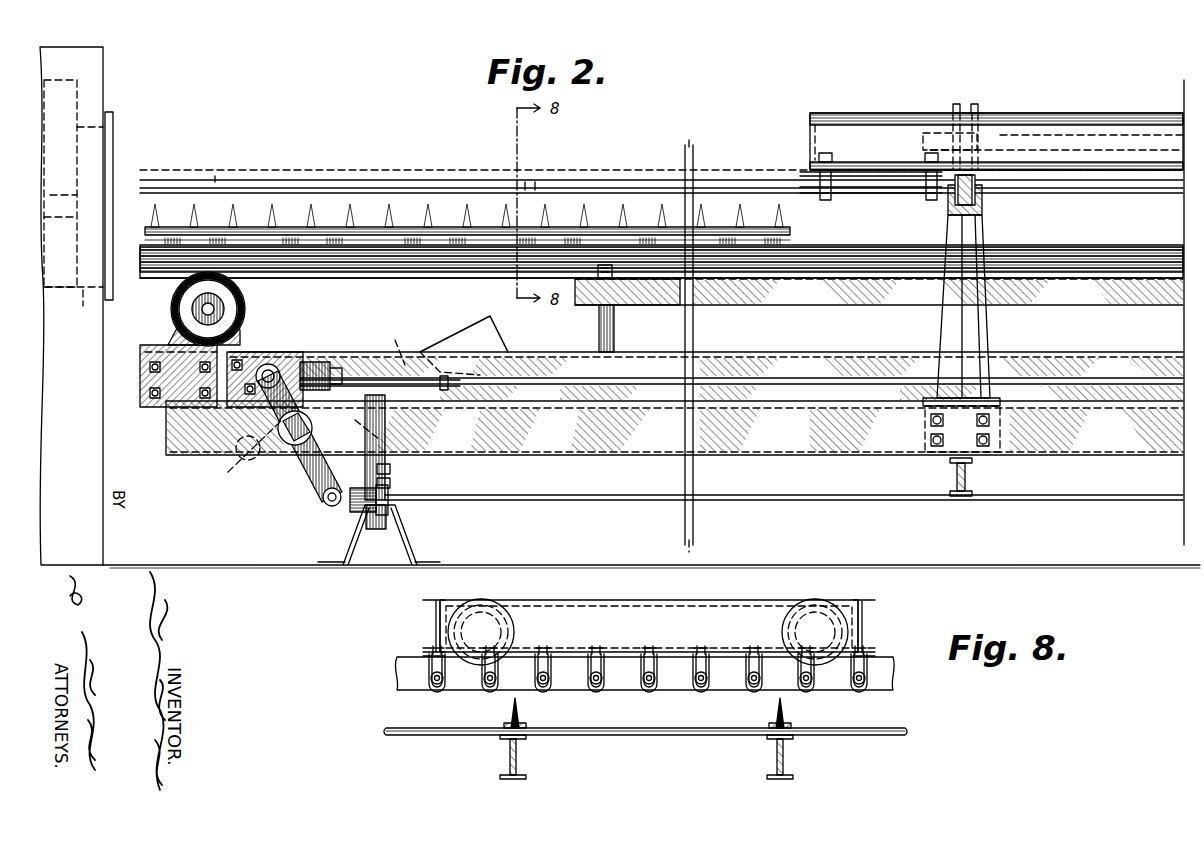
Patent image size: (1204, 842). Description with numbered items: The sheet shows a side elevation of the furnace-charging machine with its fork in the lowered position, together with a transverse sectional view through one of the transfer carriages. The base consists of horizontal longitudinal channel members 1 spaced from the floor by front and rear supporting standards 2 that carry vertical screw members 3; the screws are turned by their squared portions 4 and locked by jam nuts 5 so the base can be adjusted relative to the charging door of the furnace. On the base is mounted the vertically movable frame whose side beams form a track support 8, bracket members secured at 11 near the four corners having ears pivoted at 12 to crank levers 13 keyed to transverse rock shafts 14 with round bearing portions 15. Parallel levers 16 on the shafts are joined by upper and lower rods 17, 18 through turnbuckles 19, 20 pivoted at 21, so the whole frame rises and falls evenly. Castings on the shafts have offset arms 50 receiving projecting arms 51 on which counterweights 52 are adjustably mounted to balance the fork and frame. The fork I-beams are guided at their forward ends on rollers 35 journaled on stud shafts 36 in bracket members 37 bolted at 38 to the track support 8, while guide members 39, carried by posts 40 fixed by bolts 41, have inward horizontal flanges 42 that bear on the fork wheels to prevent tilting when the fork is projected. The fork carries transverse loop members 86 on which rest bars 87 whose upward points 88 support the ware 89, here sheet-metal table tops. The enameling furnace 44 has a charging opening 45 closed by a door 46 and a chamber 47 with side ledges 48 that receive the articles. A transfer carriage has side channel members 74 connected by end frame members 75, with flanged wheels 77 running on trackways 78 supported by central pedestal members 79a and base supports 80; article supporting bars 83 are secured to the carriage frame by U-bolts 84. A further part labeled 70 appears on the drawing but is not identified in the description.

In FIG. 2, the longitudinal channel members 1 is at (532, 444).
In FIG. 2, the supporting standards 2 is at (408, 538).
In FIG. 2, the screw members 3 is at (392, 486).
In FIG. 2, the squared portions 4 is at (392, 470).
In FIG. 2, the jam nuts 5 is at (395, 398).
In FIG. 2, the track support 8 is at (778, 358).
In FIG. 2, the bracket securing point 11 is at (300, 365).
In FIG. 2, the pivotal connection 12 is at (232, 470).
In FIG. 2, the crank lever 13 is at (258, 462).
In FIG. 2, the rock shaft 14 is at (308, 418).
In FIG. 2, the round bearing portions 15 is at (306, 452).
In FIG. 2, the parallel lever 16 is at (365, 466).
In FIG. 2, the upper link rod 17 is at (628, 384).
In FIG. 2, the lower link rod 18 is at (640, 494).
In FIG. 2, the turnbuckle 19 is at (280, 368).
In FIG. 2, the turnbuckle 20 is at (345, 505).
In FIG. 2, the turnbuckle pivot 21 is at (322, 500).
In FIG. 2, the rollers 35 is at (172, 302).
In FIG. 2, the stud shafts 36 is at (205, 313).
In FIG. 2, the bracket members 37 is at (387, 268).
In FIG. 8, the bracket members 37 is at (520, 765).
In FIG. 2, the bracket bolting point 38 is at (203, 392).
In FIG. 2, the guide members 39 is at (855, 295).
In FIG. 2, the posts 40 is at (599, 330).
In FIG. 2, the bolts 41 is at (596, 270).
In FIG. 2, the horizontal flanges 42 is at (828, 277).
In FIG. 2, the enameling furnace 44 is at (103, 442).
In FIG. 2, the charging opening 45 is at (78, 305).
In FIG. 2, the door 46 is at (113, 138).
In FIG. 2, the combustion chamber 47 is at (73, 193).
In FIG. 2, the ledges 48 is at (61, 198).
In FIG. 2, the offset arms 50 is at (363, 433).
In FIG. 2, the projecting arms 51 is at (400, 343).
In FIG. 2, the counterweight members 52 is at (484, 324).
In FIG. 2, the bolt 70 is at (248, 356).
In FIG. 2, the side frame members 74 is at (1030, 125).
In FIG. 8, the side frame members 74 is at (433, 600).
In FIG. 8, the end frame members 75 is at (640, 615).
In FIG. 8, the flanged wheels 77 is at (490, 602).
In FIG. 8, the trackways 78 is at (672, 684).
In FIG. 2, the central pedestal members 79a is at (972, 233).
In FIG. 2, the base supports 80 is at (950, 478).
In FIG. 2, the article supporting bars 83 is at (560, 185).
In FIG. 8, the article supporting bars 83 is at (437, 686).
In FIG. 8, the U-bolts 84 is at (495, 688).
In FIG. 2, the loop members 86 is at (315, 245).
In FIG. 2, the bars 87 is at (366, 226).
In FIG. 8, the bars 87 is at (530, 730).
In FIG. 2, the points 88 is at (352, 200).
In FIG. 8, the points 88 is at (512, 712).
In FIG. 2, the articles 89 is at (458, 170).